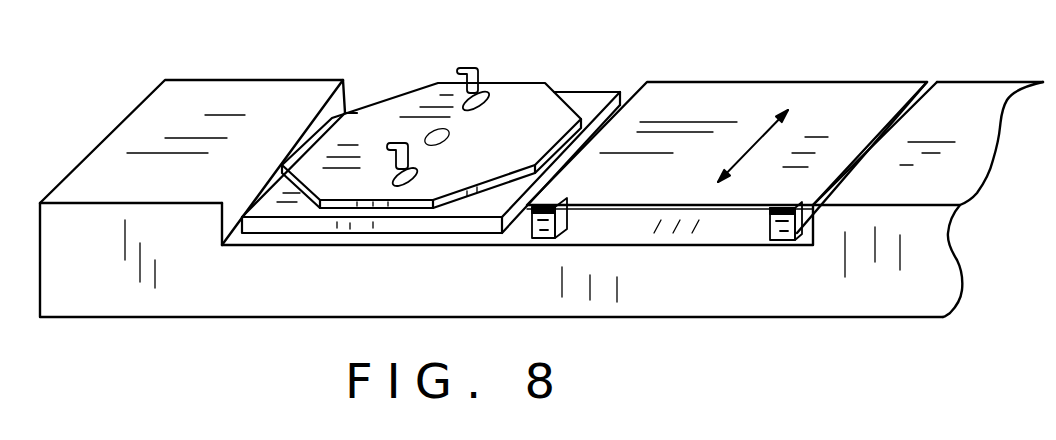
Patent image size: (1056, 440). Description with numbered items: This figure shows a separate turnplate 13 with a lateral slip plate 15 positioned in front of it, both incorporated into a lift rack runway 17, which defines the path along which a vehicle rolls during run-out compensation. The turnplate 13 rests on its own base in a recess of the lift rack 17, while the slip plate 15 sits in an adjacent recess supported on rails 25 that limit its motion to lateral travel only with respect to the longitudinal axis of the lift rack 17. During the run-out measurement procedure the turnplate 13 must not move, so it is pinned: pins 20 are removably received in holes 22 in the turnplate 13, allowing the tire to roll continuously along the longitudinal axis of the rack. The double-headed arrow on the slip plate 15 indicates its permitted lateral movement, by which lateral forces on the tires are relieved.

The turnplate 13 is at (547, 128).
The lateral slip plate 15 is at (864, 120).
The lift rack runway 17 is at (943, 128).
The pin 20 is at (397, 144).
The hole 22 is at (414, 171).
The rails 25 is at (770, 223).